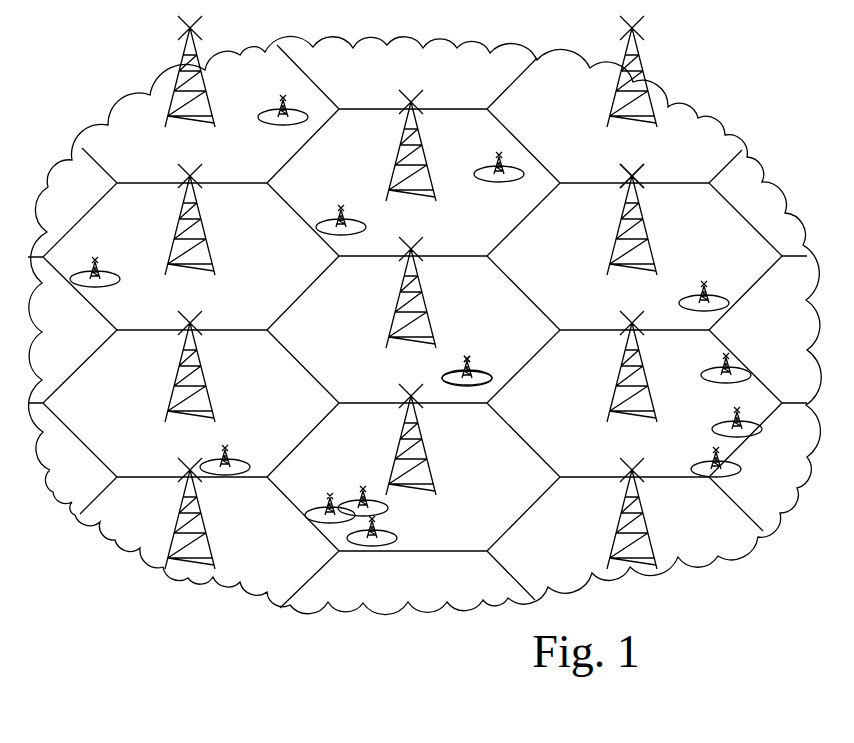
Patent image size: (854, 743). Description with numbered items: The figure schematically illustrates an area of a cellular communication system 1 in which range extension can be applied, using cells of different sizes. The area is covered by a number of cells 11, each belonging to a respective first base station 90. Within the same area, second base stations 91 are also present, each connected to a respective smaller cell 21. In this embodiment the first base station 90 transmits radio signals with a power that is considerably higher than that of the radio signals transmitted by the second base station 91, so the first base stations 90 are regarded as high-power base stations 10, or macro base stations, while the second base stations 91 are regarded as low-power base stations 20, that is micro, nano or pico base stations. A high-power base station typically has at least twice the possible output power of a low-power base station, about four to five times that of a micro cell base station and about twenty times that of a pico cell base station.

The cellular communication system 1 is at (685, 595).
The high-power base station 10 is at (655, 250).
The cell 11 is at (128, 538).
The low-power base station 20 is at (473, 380).
The cell 21 is at (492, 378).
The first base station 90 is at (612, 250).
The second base station 91 is at (467, 356).